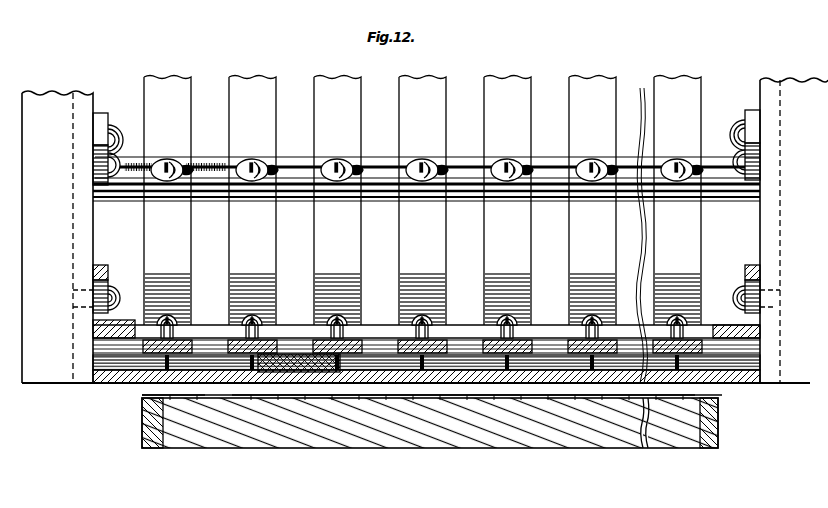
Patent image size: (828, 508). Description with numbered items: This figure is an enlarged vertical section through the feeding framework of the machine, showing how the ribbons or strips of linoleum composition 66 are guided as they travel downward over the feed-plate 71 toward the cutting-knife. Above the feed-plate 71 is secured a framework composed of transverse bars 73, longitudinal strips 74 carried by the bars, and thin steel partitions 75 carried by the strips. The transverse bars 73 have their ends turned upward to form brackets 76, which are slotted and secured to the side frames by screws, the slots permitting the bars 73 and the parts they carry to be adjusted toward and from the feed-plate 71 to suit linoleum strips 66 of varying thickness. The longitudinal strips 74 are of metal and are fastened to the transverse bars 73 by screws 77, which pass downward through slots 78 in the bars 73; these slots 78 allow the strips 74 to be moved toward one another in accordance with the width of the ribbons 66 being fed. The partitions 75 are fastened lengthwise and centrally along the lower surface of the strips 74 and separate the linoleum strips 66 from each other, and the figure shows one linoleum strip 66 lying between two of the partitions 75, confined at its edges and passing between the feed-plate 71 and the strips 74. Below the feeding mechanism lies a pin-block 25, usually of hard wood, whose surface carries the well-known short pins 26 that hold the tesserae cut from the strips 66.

The feed-plate 71 is at (752, 400).
The transverse bars 73 is at (290, 158).
The longitudinal strips 74 is at (422, 278).
The thin steel partitions 75 is at (143, 396).
The brackets 76 is at (100, 117).
The screws 77 is at (258, 161).
The slots 78 is at (378, 166).
The pin-blocks 25 is at (448, 440).
The short pins 26 is at (697, 392).
The ribbons or strips of linoleum composition 66 is at (292, 384).